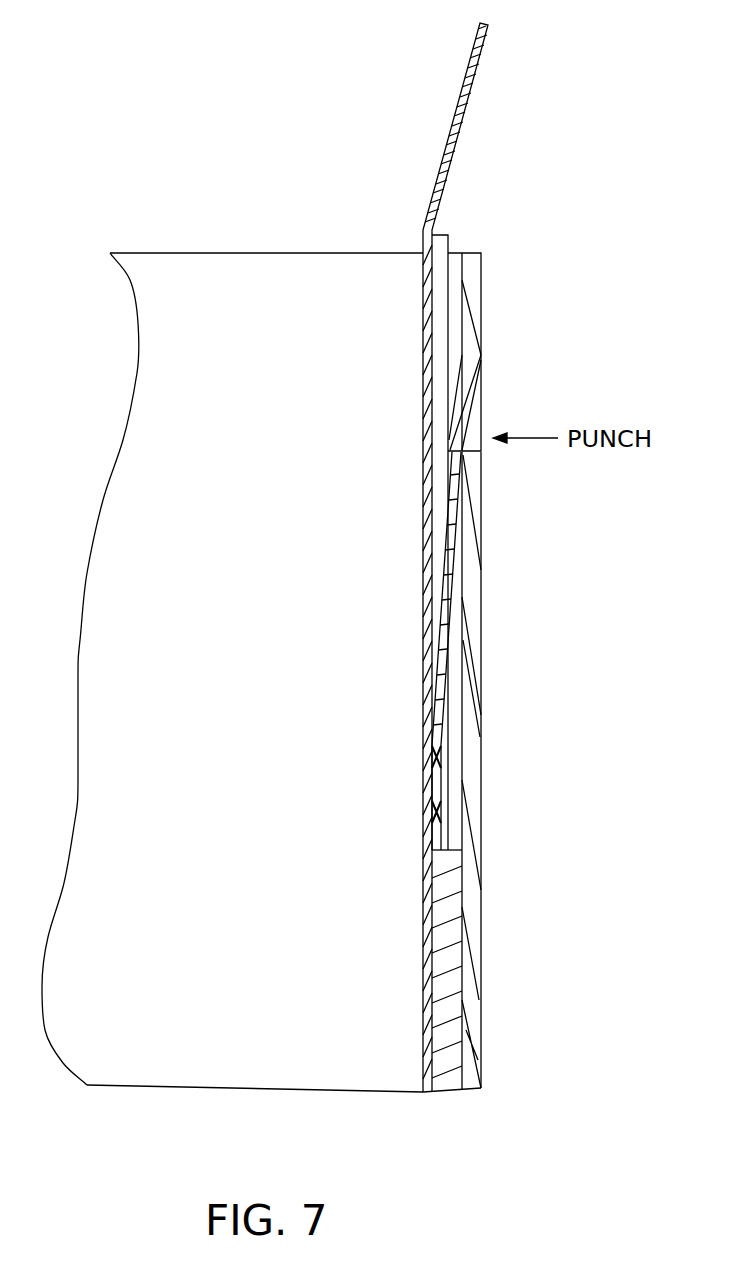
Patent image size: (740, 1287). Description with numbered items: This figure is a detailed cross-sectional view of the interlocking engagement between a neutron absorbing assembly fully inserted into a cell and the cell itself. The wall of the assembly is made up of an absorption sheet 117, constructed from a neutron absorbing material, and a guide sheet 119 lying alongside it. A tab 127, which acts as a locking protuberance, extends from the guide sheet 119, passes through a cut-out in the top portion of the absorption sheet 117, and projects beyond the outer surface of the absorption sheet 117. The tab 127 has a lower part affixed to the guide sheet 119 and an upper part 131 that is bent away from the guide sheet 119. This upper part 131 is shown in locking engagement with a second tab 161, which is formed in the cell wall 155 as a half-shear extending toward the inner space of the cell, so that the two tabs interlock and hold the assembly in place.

The absorption sheet 117 is at (447, 943).
The guide sheet 119 is at (425, 395).
The tab 127 is at (443, 683).
The upper part 131 is at (447, 573).
The cell wall 155 is at (468, 527).
The second tab 161 is at (463, 392).